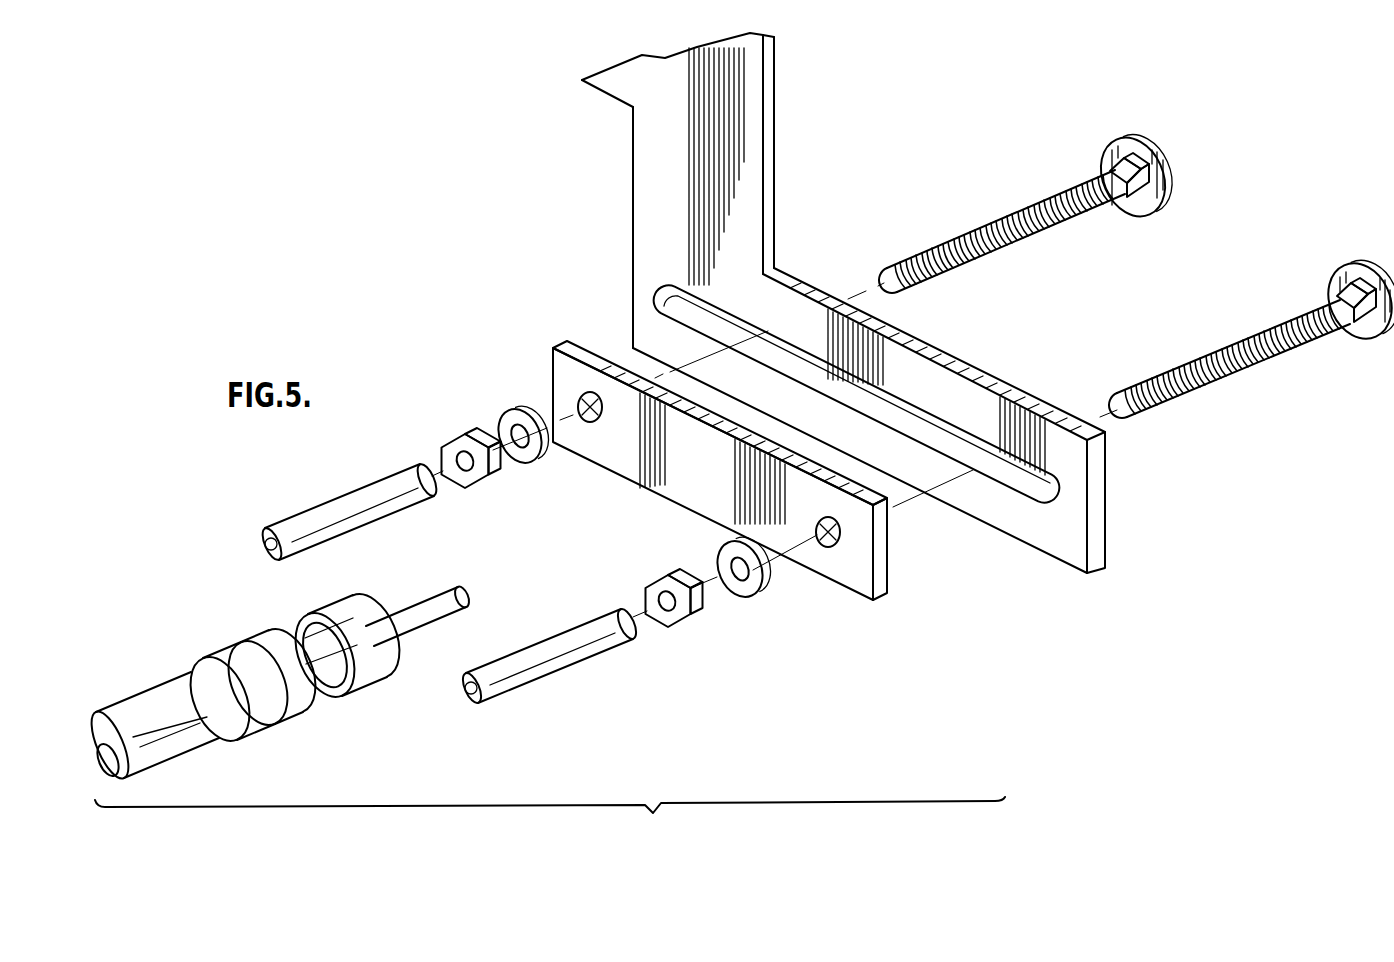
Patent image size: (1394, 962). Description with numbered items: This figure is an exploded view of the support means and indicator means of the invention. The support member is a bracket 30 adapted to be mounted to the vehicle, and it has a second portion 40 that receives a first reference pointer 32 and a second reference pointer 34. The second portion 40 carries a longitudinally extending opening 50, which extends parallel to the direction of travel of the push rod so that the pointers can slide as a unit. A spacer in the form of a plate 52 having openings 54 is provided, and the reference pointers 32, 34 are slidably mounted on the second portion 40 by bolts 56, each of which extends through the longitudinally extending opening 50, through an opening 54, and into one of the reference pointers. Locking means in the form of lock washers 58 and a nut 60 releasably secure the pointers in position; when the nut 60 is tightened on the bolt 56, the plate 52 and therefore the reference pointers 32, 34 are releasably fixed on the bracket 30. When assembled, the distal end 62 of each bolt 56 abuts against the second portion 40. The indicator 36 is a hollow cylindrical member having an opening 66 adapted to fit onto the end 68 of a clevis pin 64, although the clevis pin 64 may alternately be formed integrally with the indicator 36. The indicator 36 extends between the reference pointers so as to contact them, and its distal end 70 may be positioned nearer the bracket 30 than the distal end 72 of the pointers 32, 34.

The bracket 30 is at (767, 173).
The first reference pointer 32 is at (312, 507).
The second reference pointer 34 is at (547, 673).
The indicator 36 is at (330, 660).
The second portion 40 is at (1010, 388).
The longitudinally extending opening 50 is at (1022, 500).
The plate 52 is at (867, 553).
The openings 54 is at (588, 398).
The bolts 56 is at (1007, 213).
The lock washers 58 is at (530, 462).
The nut 60 is at (473, 483).
The distal end of bolt 62 is at (1167, 158).
The clevis pin 64 is at (187, 759).
The opening 66 is at (300, 632).
The end of clevis pin 68 is at (287, 707).
The distal end of indicator 70 is at (465, 582).
The distal end of pointers 72 is at (262, 542).